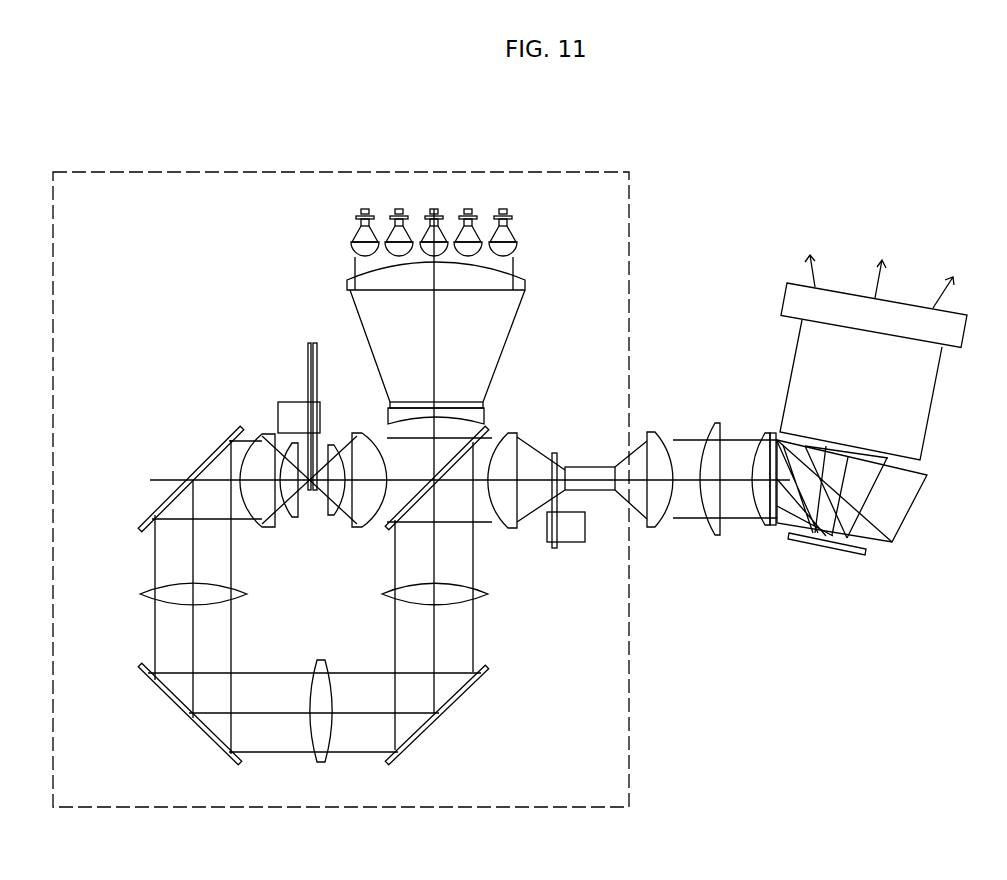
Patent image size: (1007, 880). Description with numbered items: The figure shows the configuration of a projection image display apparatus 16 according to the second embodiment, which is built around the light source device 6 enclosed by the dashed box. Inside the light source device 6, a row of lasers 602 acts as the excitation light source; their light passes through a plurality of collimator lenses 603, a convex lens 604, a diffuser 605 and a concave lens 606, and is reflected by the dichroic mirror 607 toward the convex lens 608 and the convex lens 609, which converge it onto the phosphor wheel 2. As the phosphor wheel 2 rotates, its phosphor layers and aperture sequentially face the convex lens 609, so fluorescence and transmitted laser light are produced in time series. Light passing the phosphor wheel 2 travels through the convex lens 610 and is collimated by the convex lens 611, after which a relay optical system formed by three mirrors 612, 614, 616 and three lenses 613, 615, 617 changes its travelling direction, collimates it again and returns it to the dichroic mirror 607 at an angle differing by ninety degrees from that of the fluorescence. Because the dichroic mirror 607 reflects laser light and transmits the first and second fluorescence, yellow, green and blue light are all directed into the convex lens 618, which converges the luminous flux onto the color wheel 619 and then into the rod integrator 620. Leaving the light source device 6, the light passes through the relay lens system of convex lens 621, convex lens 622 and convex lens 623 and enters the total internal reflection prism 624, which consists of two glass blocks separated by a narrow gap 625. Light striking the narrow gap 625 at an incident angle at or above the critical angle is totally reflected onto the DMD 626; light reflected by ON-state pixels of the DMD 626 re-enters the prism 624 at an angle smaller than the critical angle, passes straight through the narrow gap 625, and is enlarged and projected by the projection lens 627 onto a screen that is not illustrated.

The light source device 6 is at (95, 171).
The phosphor wheel 2 is at (308, 344).
The projection image display apparatus 16 is at (849, 377).
The lasers 602 is at (518, 213).
The collimator lenses 603 is at (526, 249).
The convex lens 604 is at (530, 288).
The diffuser 605 is at (485, 404).
The concave lens 606 is at (485, 411).
The dichroic mirror 607 is at (489, 428).
The convex lens 608 is at (357, 433).
The convex lens 609 is at (332, 444).
The convex lens 610 is at (278, 435).
The convex lens 611 is at (262, 433).
The mirror 612 is at (162, 498).
The lens 613 is at (143, 594).
The mirror 614 is at (170, 700).
The lens 615 is at (312, 762).
The mirror 616 is at (453, 698).
The lens 617 is at (484, 598).
The convex lens 618 is at (512, 530).
The color wheel 619 is at (558, 548).
The rod integrator 620 is at (590, 466).
The convex lens 621 is at (650, 433).
The convex lens 622 is at (708, 535).
The convex lens 623 is at (762, 432).
The total internal reflection prism 624 is at (906, 479).
The narrow gap 625 is at (878, 527).
The DMD 626 is at (824, 553).
The projection lens 627 is at (808, 386).